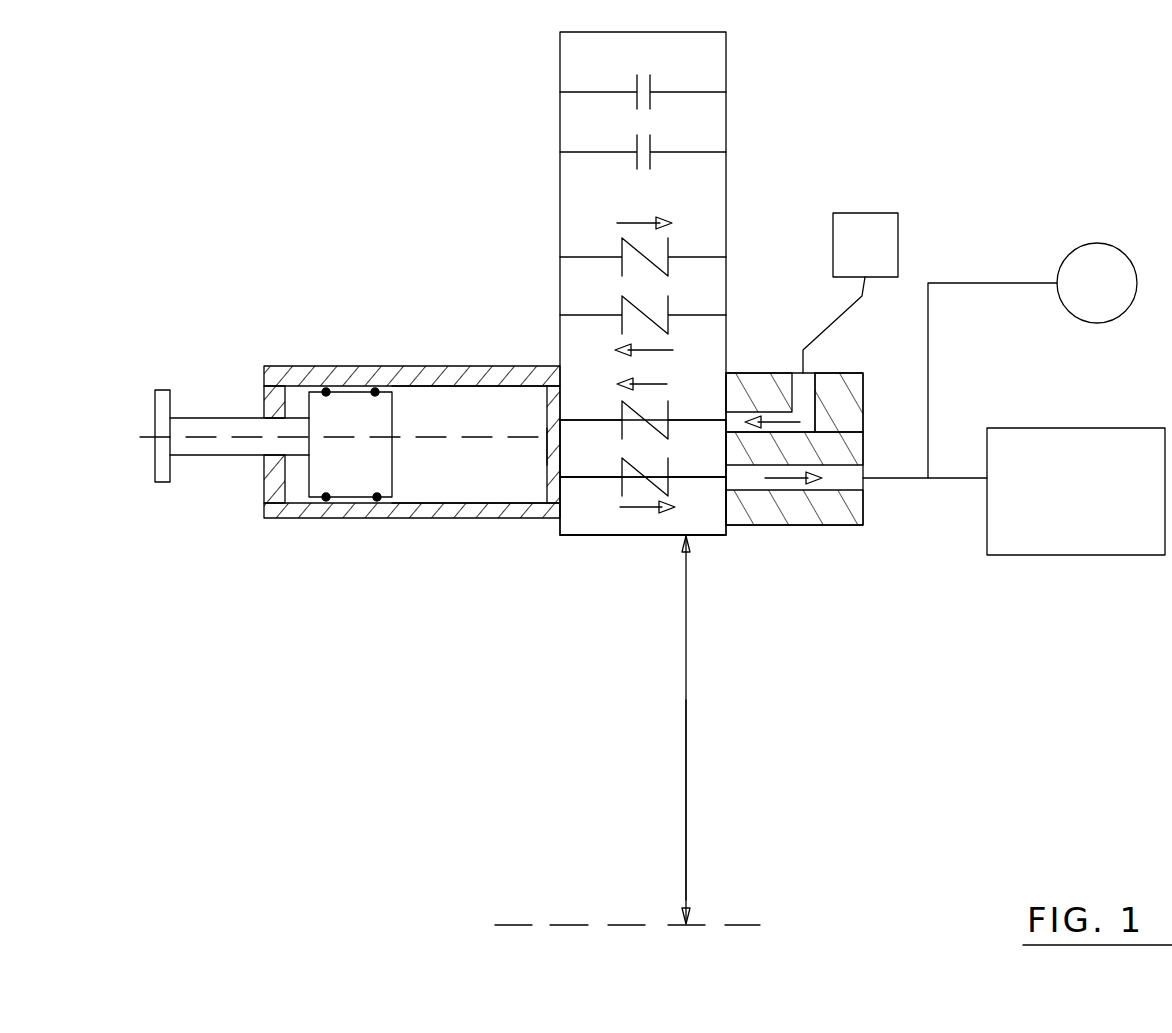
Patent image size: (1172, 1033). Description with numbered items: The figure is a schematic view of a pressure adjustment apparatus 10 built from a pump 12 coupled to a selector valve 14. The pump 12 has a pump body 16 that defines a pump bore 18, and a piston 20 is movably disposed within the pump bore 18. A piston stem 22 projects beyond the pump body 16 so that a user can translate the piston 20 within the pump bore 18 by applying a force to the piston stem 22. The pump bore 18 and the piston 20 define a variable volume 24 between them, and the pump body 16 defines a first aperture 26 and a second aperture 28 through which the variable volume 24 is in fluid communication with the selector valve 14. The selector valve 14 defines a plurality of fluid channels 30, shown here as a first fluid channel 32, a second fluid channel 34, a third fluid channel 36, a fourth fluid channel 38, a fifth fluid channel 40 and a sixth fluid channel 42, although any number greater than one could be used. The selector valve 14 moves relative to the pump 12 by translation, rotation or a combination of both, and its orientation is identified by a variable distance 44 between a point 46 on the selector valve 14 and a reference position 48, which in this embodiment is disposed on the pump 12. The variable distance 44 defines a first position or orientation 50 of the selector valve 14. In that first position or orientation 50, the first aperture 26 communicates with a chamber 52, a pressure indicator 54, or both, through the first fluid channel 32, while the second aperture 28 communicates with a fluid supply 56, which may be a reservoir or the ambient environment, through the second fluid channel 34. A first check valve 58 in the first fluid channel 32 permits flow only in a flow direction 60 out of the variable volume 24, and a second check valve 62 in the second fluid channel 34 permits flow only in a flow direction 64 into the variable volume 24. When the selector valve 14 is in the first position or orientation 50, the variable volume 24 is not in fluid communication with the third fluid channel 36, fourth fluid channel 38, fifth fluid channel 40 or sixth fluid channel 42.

The pressure adjustment apparatus 10 is at (1040, 88).
The pump 12 is at (330, 255).
The selector valve 14 is at (815, 186).
The pump body 16 is at (440, 367).
The pump bore 18 is at (480, 487).
The piston 20 is at (345, 463).
The piston stem 22 is at (200, 412).
The variable volume 24 is at (468, 428).
The first aperture 26 is at (544, 480).
The second aperture 28 is at (545, 415).
The plurality of fluid channels 30 is at (752, 126).
The first fluid channel 32 is at (698, 478).
The second fluid channel 34 is at (697, 418).
The third fluid channel 36 is at (700, 315).
The fourth fluid channel 38 is at (697, 257).
The fifth fluid channel 40 is at (590, 152).
The sixth fluid channel 42 is at (588, 92).
The variable distance 44 is at (692, 722).
The point 46 is at (677, 542).
The reference position 48 is at (512, 925).
The first position or orientation 50 is at (686, 805).
The chamber 52 is at (1032, 360).
The pressure indicator 54 is at (1014, 491).
The fluid supply 56 is at (850, 293).
The first check valve 58 is at (623, 483).
The flow direction 60 is at (820, 525).
The second check valve 62 is at (673, 432).
The flow direction 64 is at (796, 414).